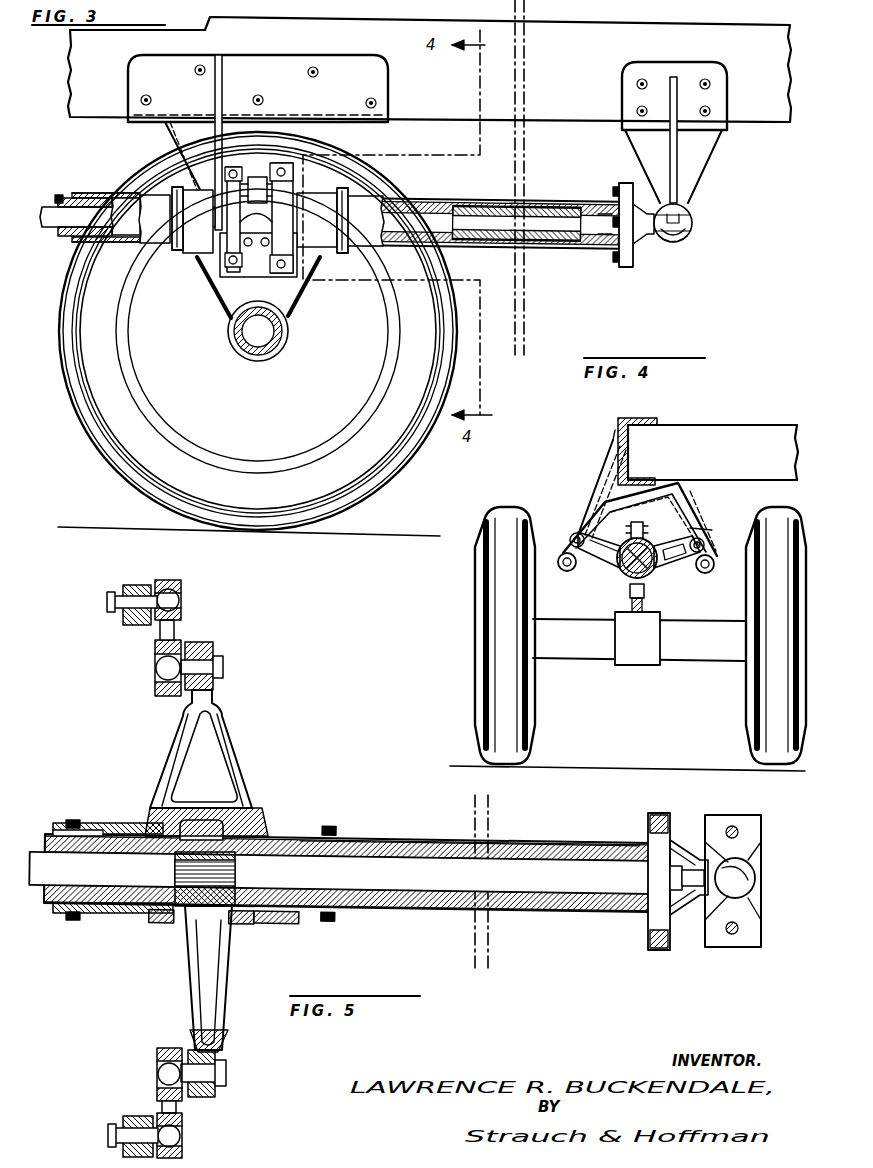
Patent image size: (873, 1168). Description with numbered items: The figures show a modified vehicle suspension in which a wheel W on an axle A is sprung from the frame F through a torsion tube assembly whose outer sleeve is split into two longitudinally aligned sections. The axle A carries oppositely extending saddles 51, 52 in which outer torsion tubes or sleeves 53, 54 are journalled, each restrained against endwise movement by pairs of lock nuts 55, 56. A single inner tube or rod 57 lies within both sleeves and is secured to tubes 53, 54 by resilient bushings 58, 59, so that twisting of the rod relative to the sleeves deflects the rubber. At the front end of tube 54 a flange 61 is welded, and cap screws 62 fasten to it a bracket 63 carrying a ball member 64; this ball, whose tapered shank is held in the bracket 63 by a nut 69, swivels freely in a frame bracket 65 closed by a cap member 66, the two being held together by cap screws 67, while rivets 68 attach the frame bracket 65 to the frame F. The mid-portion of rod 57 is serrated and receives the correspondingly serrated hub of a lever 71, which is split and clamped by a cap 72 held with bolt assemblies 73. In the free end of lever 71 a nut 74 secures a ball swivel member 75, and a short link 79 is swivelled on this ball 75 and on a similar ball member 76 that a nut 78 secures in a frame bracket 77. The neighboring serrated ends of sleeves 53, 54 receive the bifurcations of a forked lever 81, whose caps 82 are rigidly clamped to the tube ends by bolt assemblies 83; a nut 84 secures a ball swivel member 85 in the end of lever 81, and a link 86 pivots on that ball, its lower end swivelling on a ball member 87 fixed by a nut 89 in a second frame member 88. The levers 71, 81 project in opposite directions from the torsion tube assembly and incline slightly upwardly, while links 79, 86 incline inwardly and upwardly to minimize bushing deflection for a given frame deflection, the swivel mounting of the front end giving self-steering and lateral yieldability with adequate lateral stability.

In FIG. 3, the frame F is at (452, 110).
In FIG. 4, the frame F is at (617, 432).
In FIG. 3, the wheel W is at (120, 438).
In FIG. 3, the axle A is at (258, 352).
In FIG. 4, the axle A is at (708, 650).
In FIG. 3, the saddle 51 is at (200, 255).
In FIG. 5, the saddle 51 is at (108, 913).
In FIG. 3, the saddle 52 is at (335, 230).
In FIG. 5, the saddle 52 is at (292, 926).
In FIG. 3, the outer torsion tube 53 is at (125, 238).
In FIG. 5, the outer torsion tube 53 is at (60, 824).
In FIG. 3, the outer torsion tube 54 is at (410, 200).
In FIG. 5, the outer torsion tube 54 is at (510, 846).
In FIG. 3, the lock nuts 55 is at (160, 190).
In FIG. 5, the lock nuts 55 is at (68, 918).
In FIG. 3, the lock nuts 56 is at (350, 192).
In FIG. 5, the lock nuts 56 is at (338, 922).
In FIG. 3, the tube or rod 57 is at (548, 203).
In FIG. 4, the tube or rod 57 is at (624, 572).
In FIG. 5, the tube or rod 57 is at (115, 866).
In FIG. 3, the resilient bushing 58 is at (128, 203).
In FIG. 5, the resilient bushing 58 is at (130, 824).
In FIG. 3, the resilient bushing 59 is at (598, 244).
In FIG. 4, the resilient bushing 59 is at (646, 588).
In FIG. 5, the resilient bushing 59 is at (398, 840).
In FIG. 3, the flange 61 is at (610, 262).
In FIG. 5, the flange 61 is at (656, 814).
In FIG. 3, the cap screws 62 is at (627, 267).
In FIG. 5, the cap screws 62 is at (650, 945).
In FIG. 3, the bracket 63 is at (645, 244).
In FIG. 5, the bracket 63 is at (685, 842).
In FIG. 5, the ball member 64 is at (746, 880).
In FIG. 3, the frame bracket 65 is at (690, 185).
In FIG. 3, the cap member 66 is at (685, 241).
In FIG. 5, the cap member 66 is at (716, 948).
In FIG. 3, the cap screws 67 is at (693, 213).
In FIG. 5, the cap screws 67 is at (738, 828).
In FIG. 3, the rivets 68 is at (706, 82).
In FIG. 5, the nut 69 is at (668, 878).
In FIG. 3, the lever 71 is at (300, 200).
In FIG. 4, the lever 71 is at (602, 558).
In FIG. 5, the lever 71 is at (222, 994).
In FIG. 5, the cap 72 is at (206, 820).
In FIG. 3, the bolt assemblies 73 is at (250, 277).
In FIG. 4, the nut 74 is at (604, 500).
In FIG. 5, the nut 74 is at (228, 1070).
In FIG. 3, the ball swivel member 75 is at (207, 120).
In FIG. 5, the ball swivel member 75 is at (158, 1072).
In FIG. 4, the ball member 76 is at (565, 572).
In FIG. 5, the ball member 76 is at (182, 1136).
In FIG. 3, the frame bracket 77 is at (200, 130).
In FIG. 4, the frame bracket 77 is at (600, 468).
In FIG. 5, the frame bracket 77 is at (136, 1118).
In FIG. 5, the nut 78 is at (108, 1144).
In FIG. 4, the link 79 is at (571, 536).
In FIG. 5, the link 79 is at (178, 1108).
In FIG. 4, the forked lever 81 is at (668, 560).
In FIG. 5, the forked lever 81 is at (238, 758).
In FIG. 3, the caps 82 is at (338, 230).
In FIG. 5, the caps 82 is at (164, 926).
In FIG. 3, the bolt assemblies 83 is at (258, 180).
In FIG. 4, the bolt assemblies 83 is at (644, 524).
In FIG. 4, the nut 84 is at (702, 538).
In FIG. 5, the nut 84 is at (226, 664).
In FIG. 5, the ball swivel member 85 is at (158, 668).
In FIG. 4, the link 86 is at (712, 530).
In FIG. 5, the link 86 is at (176, 632).
In FIG. 4, the ball member 87 is at (707, 574).
In FIG. 5, the ball member 87 is at (180, 600).
In FIG. 4, the second frame member 88 is at (692, 506).
In FIG. 5, the second frame member 88 is at (138, 584).
In FIG. 5, the nut 89 is at (108, 594).